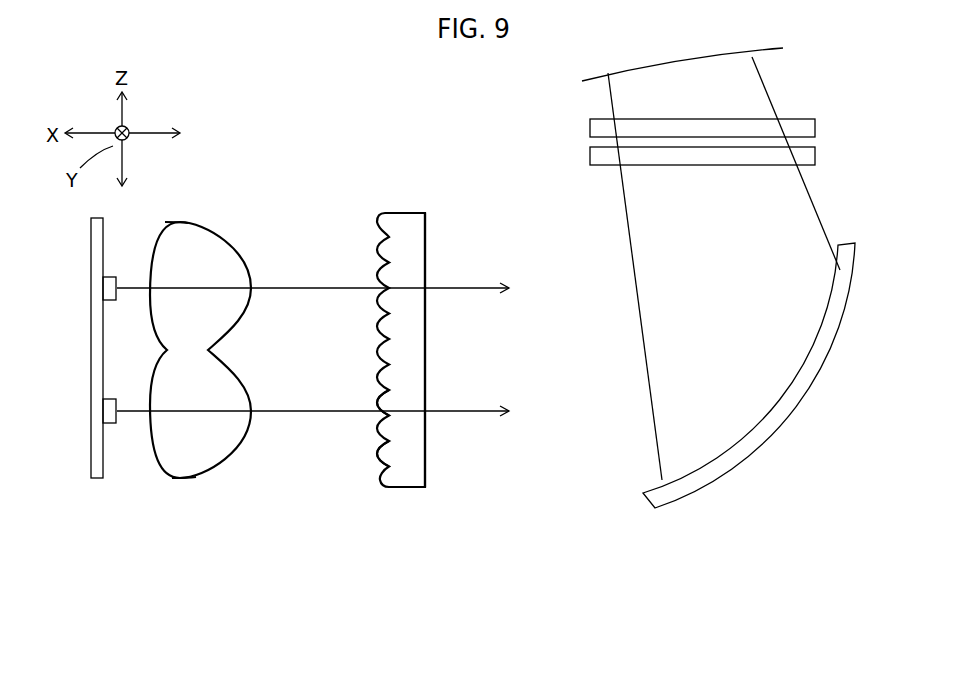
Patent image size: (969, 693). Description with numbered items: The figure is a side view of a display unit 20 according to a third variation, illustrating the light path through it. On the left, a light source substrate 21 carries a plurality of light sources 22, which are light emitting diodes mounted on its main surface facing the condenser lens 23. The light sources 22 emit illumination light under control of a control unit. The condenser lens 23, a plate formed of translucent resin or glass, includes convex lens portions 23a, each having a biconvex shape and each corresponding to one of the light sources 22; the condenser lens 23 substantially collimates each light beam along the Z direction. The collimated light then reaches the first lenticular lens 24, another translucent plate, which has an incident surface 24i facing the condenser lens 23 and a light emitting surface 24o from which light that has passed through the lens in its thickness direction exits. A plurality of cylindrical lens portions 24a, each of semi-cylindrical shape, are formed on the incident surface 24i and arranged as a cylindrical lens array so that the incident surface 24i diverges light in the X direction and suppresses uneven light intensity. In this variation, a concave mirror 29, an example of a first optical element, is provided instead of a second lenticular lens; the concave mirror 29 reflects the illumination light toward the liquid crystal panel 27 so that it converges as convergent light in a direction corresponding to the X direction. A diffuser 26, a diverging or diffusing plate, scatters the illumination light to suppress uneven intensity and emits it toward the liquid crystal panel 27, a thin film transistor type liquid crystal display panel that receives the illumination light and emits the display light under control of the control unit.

The display unit 20 is at (634, 564).
The light source substrate 21 is at (98, 482).
The light source 22 is at (109, 276).
The condenser lens 23 is at (209, 474).
The convex lens portion 23a is at (184, 233).
The first lenticular lens 24 is at (413, 490).
The cylindrical lens portion 24a is at (381, 457).
The incident surface 24i is at (382, 481).
The light emitting surface 24o is at (425, 477).
The diffuser 26 is at (817, 154).
The liquid crystal panel 27 is at (817, 120).
The concave mirror 29 is at (753, 462).